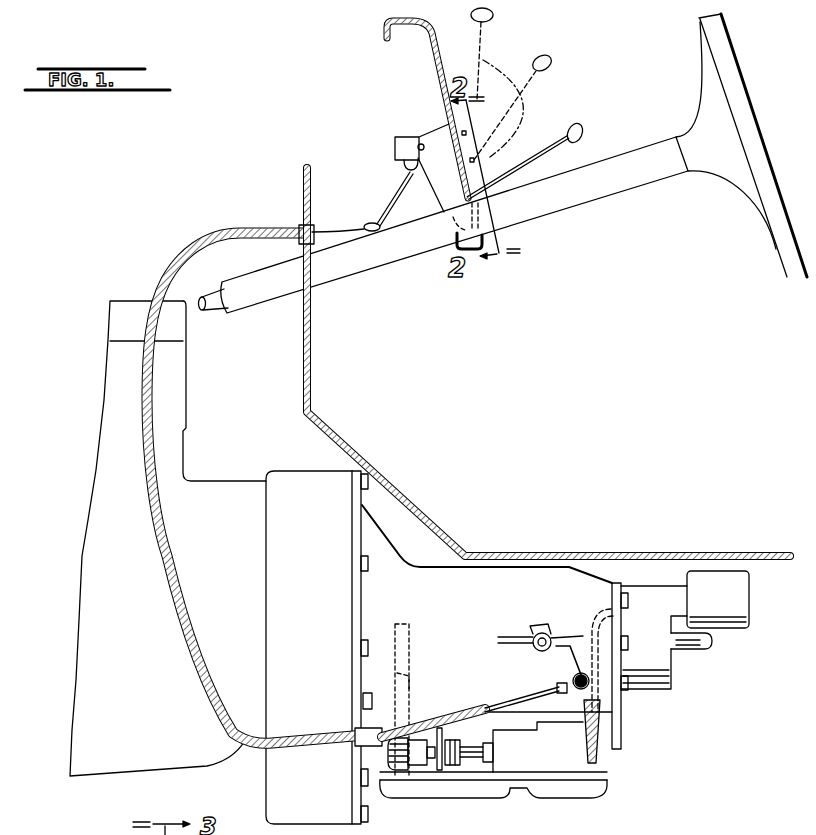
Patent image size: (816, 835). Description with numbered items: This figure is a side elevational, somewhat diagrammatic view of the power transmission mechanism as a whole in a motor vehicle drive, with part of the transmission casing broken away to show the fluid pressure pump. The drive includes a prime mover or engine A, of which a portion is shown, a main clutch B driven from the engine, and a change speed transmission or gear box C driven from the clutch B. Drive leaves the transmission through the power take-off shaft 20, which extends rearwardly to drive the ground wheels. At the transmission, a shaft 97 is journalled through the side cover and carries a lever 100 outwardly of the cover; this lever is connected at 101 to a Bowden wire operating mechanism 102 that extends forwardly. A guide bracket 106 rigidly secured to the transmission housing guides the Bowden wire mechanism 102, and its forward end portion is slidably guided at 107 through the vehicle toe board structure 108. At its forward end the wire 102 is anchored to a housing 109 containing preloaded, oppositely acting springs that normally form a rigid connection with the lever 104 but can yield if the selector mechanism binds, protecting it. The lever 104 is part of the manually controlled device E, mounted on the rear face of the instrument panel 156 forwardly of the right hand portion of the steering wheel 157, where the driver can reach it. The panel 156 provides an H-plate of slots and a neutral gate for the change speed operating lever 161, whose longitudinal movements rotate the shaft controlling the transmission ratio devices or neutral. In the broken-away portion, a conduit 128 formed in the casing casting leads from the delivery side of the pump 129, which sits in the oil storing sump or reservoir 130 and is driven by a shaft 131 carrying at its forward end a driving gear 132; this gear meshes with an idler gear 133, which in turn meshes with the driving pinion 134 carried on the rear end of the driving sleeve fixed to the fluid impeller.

The steering wheel 157 is at (733, 52).
The instrument panel 156 is at (433, 57).
The change speed operating lever 161 is at (564, 132).
The manually controlled device E is at (435, 128).
The lever 104 is at (395, 193).
The housing 109 is at (368, 223).
The toe board structure 108 is at (301, 174).
The slidable guide 107 is at (297, 229).
The engine A is at (131, 316).
The main clutch B is at (325, 484).
The change speed transmission C is at (489, 578).
The shaft 97 is at (548, 634).
The lever 100 is at (560, 680).
The connection 101 is at (589, 688).
The Bowden wire operating mechanism 102 is at (477, 707).
The guide bracket 106 is at (356, 730).
The conduit 128 is at (597, 757).
The pump 129 is at (522, 757).
The oil storing sump 130 is at (477, 775).
The shaft 131 is at (463, 762).
The driving gear 132 is at (399, 773).
The idler gear 133 is at (410, 672).
The driving pinion 134 is at (410, 636).
The power take-off shaft 20 is at (699, 652).